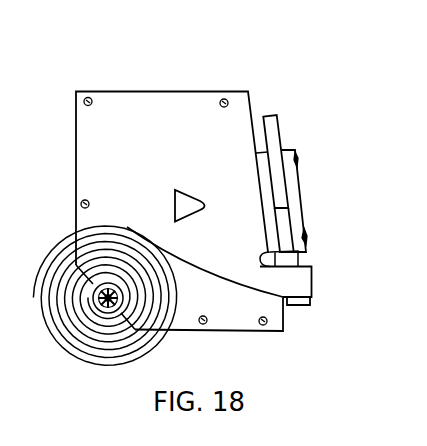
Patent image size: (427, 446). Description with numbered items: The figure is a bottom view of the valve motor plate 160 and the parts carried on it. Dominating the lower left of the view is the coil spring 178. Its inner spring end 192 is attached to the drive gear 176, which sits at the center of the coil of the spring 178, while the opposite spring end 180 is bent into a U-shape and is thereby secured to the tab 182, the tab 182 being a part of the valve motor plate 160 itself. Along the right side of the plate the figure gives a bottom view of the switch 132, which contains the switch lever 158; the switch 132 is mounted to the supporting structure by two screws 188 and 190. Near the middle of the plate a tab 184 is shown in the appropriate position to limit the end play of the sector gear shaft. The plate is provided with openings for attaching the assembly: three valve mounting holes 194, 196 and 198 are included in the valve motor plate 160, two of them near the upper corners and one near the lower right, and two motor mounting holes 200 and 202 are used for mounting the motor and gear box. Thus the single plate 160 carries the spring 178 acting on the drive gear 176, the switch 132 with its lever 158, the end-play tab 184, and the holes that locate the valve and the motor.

The switch 132 is at (296, 190).
The switch lever 158 is at (272, 124).
The valve motor plate 160 is at (83, 125).
The drive gear 176 is at (118, 295).
The spring 178 is at (63, 246).
The spring end 180 is at (312, 298).
The tab 182 is at (292, 306).
The tab 184 is at (188, 203).
The screw 188 is at (297, 157).
The screw 190 is at (307, 235).
The spring end 192 is at (105, 313).
The valve mounting hole 194 is at (79, 88).
The valve mounting hole 196 is at (234, 92).
The valve mounting hole 198 is at (262, 328).
The motor mounting hole 200 is at (211, 324).
The motor mounting hole 202 is at (82, 200).